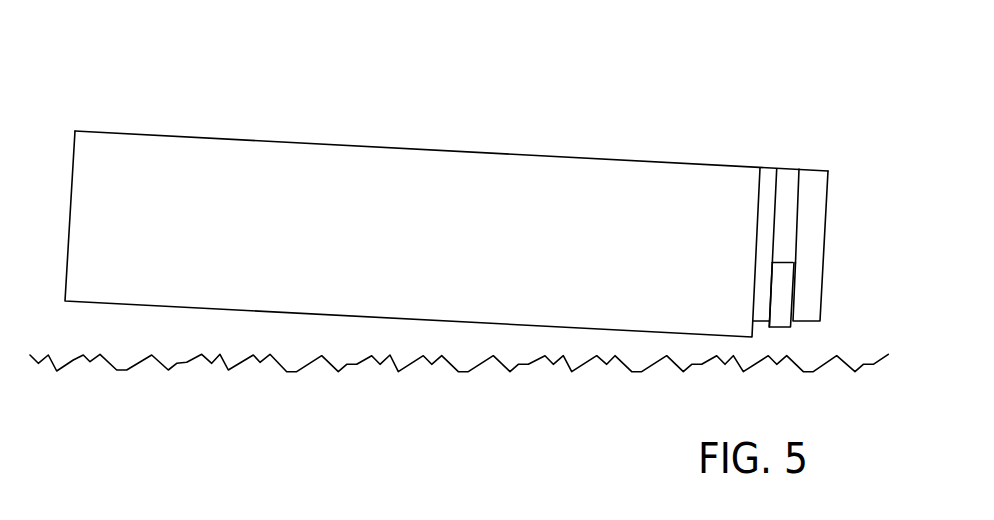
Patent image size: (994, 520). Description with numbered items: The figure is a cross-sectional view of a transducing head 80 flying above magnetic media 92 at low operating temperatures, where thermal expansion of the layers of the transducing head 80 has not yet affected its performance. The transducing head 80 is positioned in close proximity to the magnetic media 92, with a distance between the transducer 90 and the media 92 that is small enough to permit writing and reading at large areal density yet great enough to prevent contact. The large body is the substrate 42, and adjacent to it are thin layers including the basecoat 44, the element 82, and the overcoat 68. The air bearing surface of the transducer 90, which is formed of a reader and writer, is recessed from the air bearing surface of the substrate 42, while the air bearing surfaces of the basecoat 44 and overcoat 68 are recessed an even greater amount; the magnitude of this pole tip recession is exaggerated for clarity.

The substrate 42 is at (442, 187).
The basecoat 44 is at (769, 194).
The overcoat 68 is at (803, 270).
The transducing head 80 is at (802, 82).
The intermediate member 82 is at (787, 216).
The transducer 90 is at (779, 313).
The magnetic media 92 is at (466, 378).